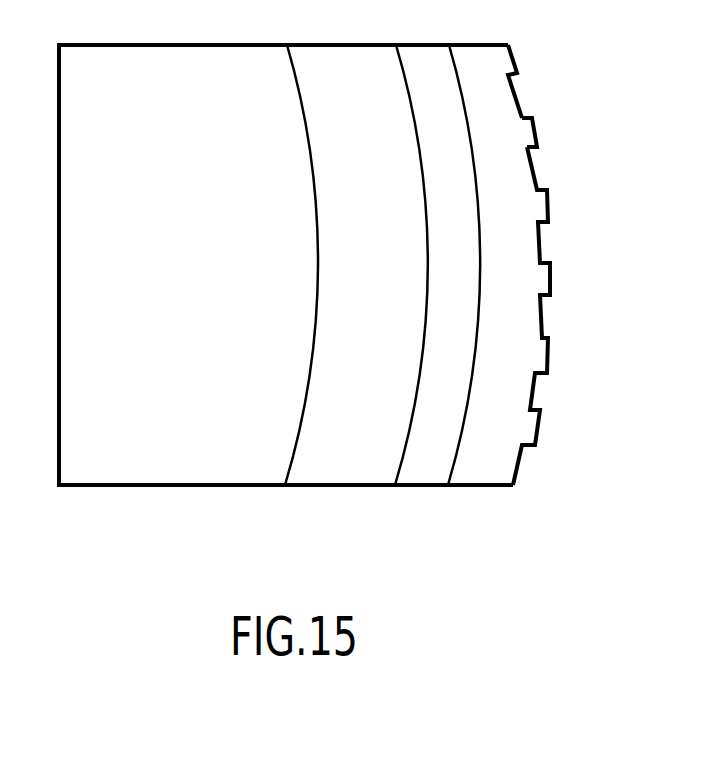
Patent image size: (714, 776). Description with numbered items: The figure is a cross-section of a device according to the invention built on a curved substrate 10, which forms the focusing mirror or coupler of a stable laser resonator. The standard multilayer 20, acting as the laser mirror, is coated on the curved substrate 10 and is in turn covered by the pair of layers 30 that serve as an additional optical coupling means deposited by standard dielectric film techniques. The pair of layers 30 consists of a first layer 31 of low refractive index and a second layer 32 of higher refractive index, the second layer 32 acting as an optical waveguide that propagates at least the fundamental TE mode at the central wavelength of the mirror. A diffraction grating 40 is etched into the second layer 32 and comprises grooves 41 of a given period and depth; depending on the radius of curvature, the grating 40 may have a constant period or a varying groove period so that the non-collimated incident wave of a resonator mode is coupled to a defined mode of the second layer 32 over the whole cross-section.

The curved substrate 10 is at (169, 457).
The standard multilayer 20 is at (332, 460).
The first layer 31 is at (413, 473).
The pair of layers 30 is at (444, 492).
The second layer 32 is at (478, 458).
The diffraction grating 40 is at (530, 460).
The grooves 41 is at (534, 110).